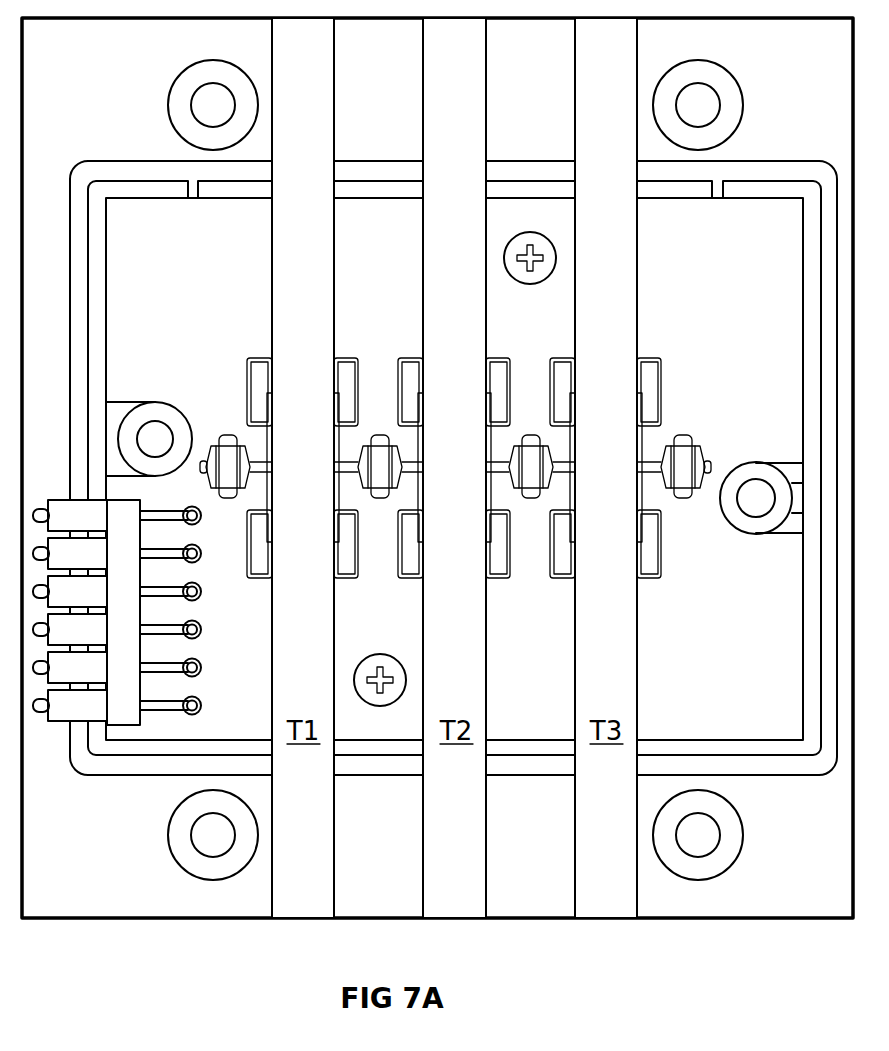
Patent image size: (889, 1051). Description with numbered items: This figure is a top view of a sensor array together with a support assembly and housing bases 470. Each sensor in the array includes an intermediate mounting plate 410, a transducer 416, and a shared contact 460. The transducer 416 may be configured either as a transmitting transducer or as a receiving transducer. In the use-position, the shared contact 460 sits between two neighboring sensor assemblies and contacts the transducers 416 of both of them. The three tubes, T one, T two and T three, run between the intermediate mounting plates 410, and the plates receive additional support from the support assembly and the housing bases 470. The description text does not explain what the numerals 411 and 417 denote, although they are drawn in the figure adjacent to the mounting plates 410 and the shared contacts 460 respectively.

The intermediate mounting plate 410 is at (488, 397).
The contact pad 411 is at (419, 402).
The transducer 416 is at (252, 447).
The lead 417 is at (352, 482).
The shared contact 460 is at (467, 484).
The housing base 470 is at (475, 425).